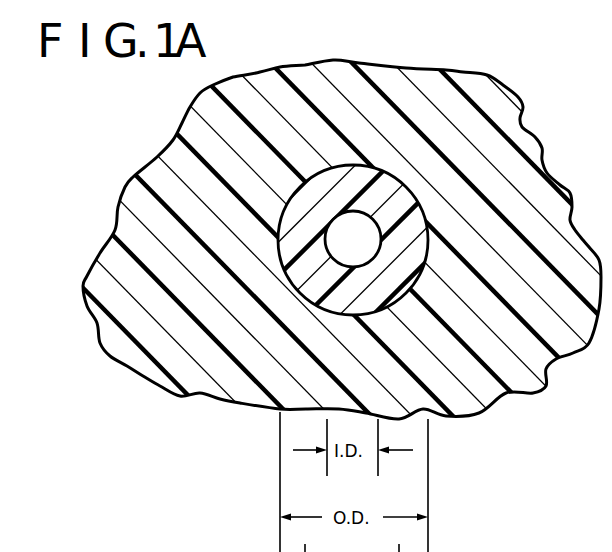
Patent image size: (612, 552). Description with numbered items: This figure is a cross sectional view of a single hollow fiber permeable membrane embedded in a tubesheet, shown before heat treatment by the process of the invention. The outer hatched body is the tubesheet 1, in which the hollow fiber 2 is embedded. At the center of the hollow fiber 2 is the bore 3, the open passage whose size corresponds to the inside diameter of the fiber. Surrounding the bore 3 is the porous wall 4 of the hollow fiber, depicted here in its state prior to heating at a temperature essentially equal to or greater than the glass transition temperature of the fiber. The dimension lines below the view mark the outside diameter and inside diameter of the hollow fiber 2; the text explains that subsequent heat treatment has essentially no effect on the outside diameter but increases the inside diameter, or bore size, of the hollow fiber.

The tubesheet 1 is at (498, 117).
The hollow fiber 2 is at (436, 206).
The bore of the hollow fiber 3 is at (362, 253).
The porous wall of the hollow fiber 4 is at (303, 215).